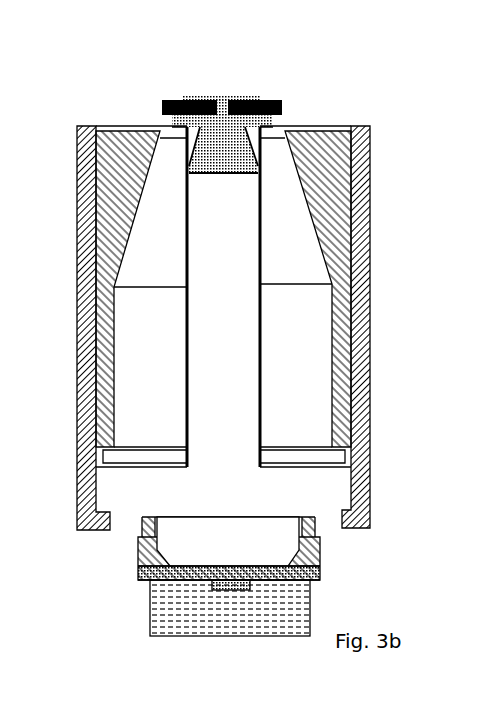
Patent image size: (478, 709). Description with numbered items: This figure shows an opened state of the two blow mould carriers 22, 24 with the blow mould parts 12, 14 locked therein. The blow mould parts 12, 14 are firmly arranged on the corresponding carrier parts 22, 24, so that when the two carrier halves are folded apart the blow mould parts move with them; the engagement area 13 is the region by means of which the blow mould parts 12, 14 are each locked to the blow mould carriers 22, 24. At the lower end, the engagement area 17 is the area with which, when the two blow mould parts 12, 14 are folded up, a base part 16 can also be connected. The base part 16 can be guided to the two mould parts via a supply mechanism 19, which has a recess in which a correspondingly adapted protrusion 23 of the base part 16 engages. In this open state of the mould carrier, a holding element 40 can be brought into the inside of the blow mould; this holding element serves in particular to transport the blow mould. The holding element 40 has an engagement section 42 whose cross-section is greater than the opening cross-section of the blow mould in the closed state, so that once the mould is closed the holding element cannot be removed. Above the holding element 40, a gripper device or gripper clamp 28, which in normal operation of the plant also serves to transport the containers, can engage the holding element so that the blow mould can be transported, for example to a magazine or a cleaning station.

The blow mould part 12 is at (103, 130).
The engagement area 13 is at (121, 157).
The blow mould part 14 is at (313, 150).
The base part 16 is at (150, 575).
The engagement area 17 is at (143, 532).
The supply mechanism 19 is at (292, 600).
The blow mould carrier 22 is at (78, 218).
The protrusion 23 is at (230, 590).
The blow mould carrier 24 is at (370, 212).
The gripper device 28 is at (261, 98).
The holding element 40 is at (207, 178).
The engagement section 42 is at (226, 152).